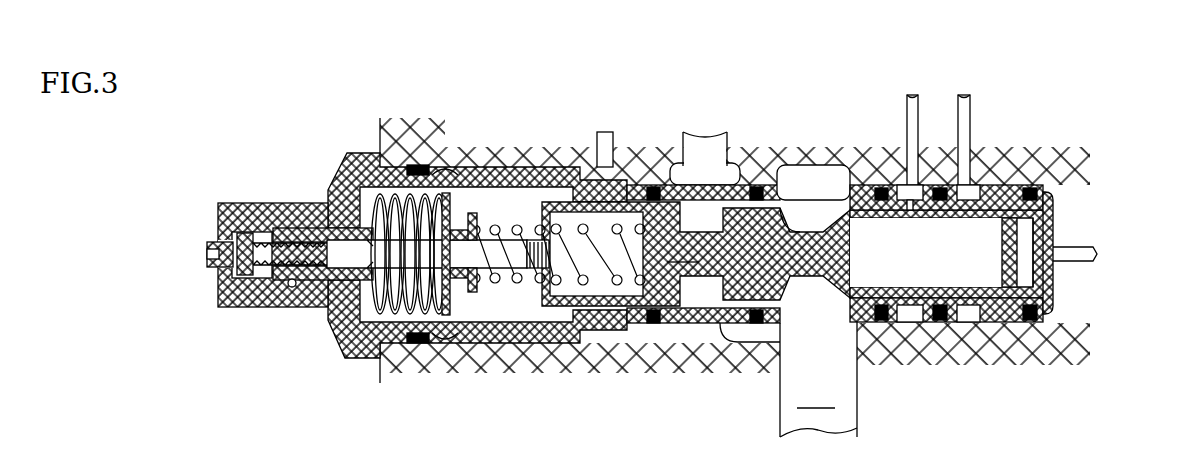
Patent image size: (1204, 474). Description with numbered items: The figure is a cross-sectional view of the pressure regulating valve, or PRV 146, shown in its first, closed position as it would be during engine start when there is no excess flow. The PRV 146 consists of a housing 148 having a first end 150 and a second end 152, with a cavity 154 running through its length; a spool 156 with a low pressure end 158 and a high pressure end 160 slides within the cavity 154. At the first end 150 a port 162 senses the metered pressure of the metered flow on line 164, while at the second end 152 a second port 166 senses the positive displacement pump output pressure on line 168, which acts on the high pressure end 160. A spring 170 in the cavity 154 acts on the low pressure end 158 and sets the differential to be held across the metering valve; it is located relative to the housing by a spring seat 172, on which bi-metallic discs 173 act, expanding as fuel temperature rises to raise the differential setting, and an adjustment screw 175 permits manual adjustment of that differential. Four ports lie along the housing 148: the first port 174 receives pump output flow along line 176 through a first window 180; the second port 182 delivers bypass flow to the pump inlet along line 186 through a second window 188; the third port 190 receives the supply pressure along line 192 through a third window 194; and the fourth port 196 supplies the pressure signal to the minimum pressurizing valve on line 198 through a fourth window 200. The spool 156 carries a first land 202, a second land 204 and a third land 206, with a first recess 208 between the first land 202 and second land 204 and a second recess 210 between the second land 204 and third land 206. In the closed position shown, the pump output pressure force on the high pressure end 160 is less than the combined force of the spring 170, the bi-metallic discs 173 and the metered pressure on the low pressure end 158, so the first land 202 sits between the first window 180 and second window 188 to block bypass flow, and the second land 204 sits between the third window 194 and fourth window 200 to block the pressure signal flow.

The pressure regulating valve 146 is at (228, 101).
The housing 148 is at (497, 335).
The first end 150 is at (218, 295).
The second end 152 is at (1043, 310).
The cavity 154 is at (770, 213).
The spool 156 is at (787, 254).
The low pressure end 158 is at (557, 197).
The high pressure end 160 is at (1017, 248).
The port 162 is at (618, 172).
The line 164 is at (578, 168).
The second port 166 is at (1057, 242).
The line 168 is at (1083, 257).
The spring 170 is at (530, 280).
The spring seat 172 is at (470, 217).
The bi-metallic discs 173 is at (373, 210).
The first port 174 is at (700, 333).
The adjustment screw 175 is at (218, 244).
The line 176 is at (686, 133).
The first window 180 is at (678, 333).
The second port 182 is at (830, 332).
The line 186 is at (848, 428).
The second window 188 is at (785, 227).
The third port 190 is at (1007, 193).
The line 192 is at (970, 148).
The third window 194 is at (970, 210).
The fourth port 196 is at (903, 183).
The line 198 is at (907, 118).
The fourth window 200 is at (910, 210).
The first land 202 is at (723, 297).
The second land 204 is at (867, 188).
The third land 206 is at (1037, 193).
The first recess 208 is at (773, 303).
The second recess 210 is at (1007, 320).